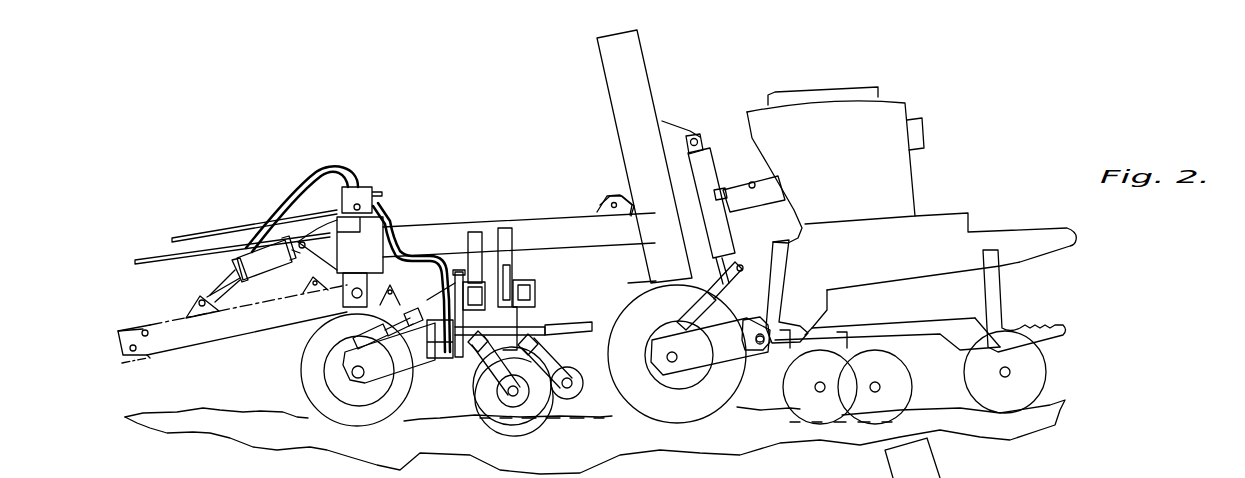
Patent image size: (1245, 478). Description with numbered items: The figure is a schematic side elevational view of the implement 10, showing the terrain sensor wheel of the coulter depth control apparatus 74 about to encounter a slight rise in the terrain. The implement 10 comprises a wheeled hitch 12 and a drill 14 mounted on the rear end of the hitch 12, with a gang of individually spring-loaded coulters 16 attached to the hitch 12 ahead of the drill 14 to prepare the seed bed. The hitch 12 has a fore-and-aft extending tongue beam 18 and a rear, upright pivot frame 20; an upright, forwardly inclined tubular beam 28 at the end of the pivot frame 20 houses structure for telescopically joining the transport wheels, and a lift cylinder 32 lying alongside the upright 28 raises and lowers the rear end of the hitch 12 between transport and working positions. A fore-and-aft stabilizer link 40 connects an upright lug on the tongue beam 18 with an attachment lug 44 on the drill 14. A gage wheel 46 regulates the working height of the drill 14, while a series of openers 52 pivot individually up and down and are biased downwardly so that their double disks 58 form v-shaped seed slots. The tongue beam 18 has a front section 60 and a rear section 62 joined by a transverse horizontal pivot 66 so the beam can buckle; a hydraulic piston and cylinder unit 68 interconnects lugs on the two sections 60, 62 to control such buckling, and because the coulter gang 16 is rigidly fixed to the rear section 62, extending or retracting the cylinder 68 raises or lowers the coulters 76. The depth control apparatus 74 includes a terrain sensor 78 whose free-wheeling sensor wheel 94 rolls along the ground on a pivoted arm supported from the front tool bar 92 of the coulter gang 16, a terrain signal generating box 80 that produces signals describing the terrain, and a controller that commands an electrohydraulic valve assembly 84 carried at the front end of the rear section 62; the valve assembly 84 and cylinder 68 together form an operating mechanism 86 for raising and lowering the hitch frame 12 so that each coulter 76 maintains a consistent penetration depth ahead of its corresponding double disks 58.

The implement 10 is at (697, 110).
The wheeled hitch 12 is at (427, 213).
The drill 14 is at (929, 206).
The gang of coulters 16 is at (472, 403).
The tongue beam 18 is at (402, 228).
The pivot frame 20 is at (618, 142).
The tubular beam 28 is at (641, 71).
The lift cylinder 32 is at (710, 221).
The stabilizer link 40 is at (742, 195).
The attachment lug 44 is at (767, 178).
The left gage wheel 46 is at (685, 415).
The opener 52 is at (865, 325).
The double disks 58 is at (786, 396).
The front section 60 is at (176, 322).
The rear section 62 is at (444, 233).
The transverse horizontal pivot 66 is at (369, 293).
The hydraulic piston and cylinder unit 68 is at (233, 268).
The coulter depth control apparatus 74 is at (412, 401).
The coulter 76 is at (533, 408).
The terrain sensor 78 is at (374, 426).
The terrain signal generating box 80 is at (437, 352).
The electrohydraulic valve assembly 84 is at (375, 186).
The operating mechanism 86 is at (272, 282).
The front tool bar 92 is at (477, 303).
The sensor wheel 94 is at (316, 395).